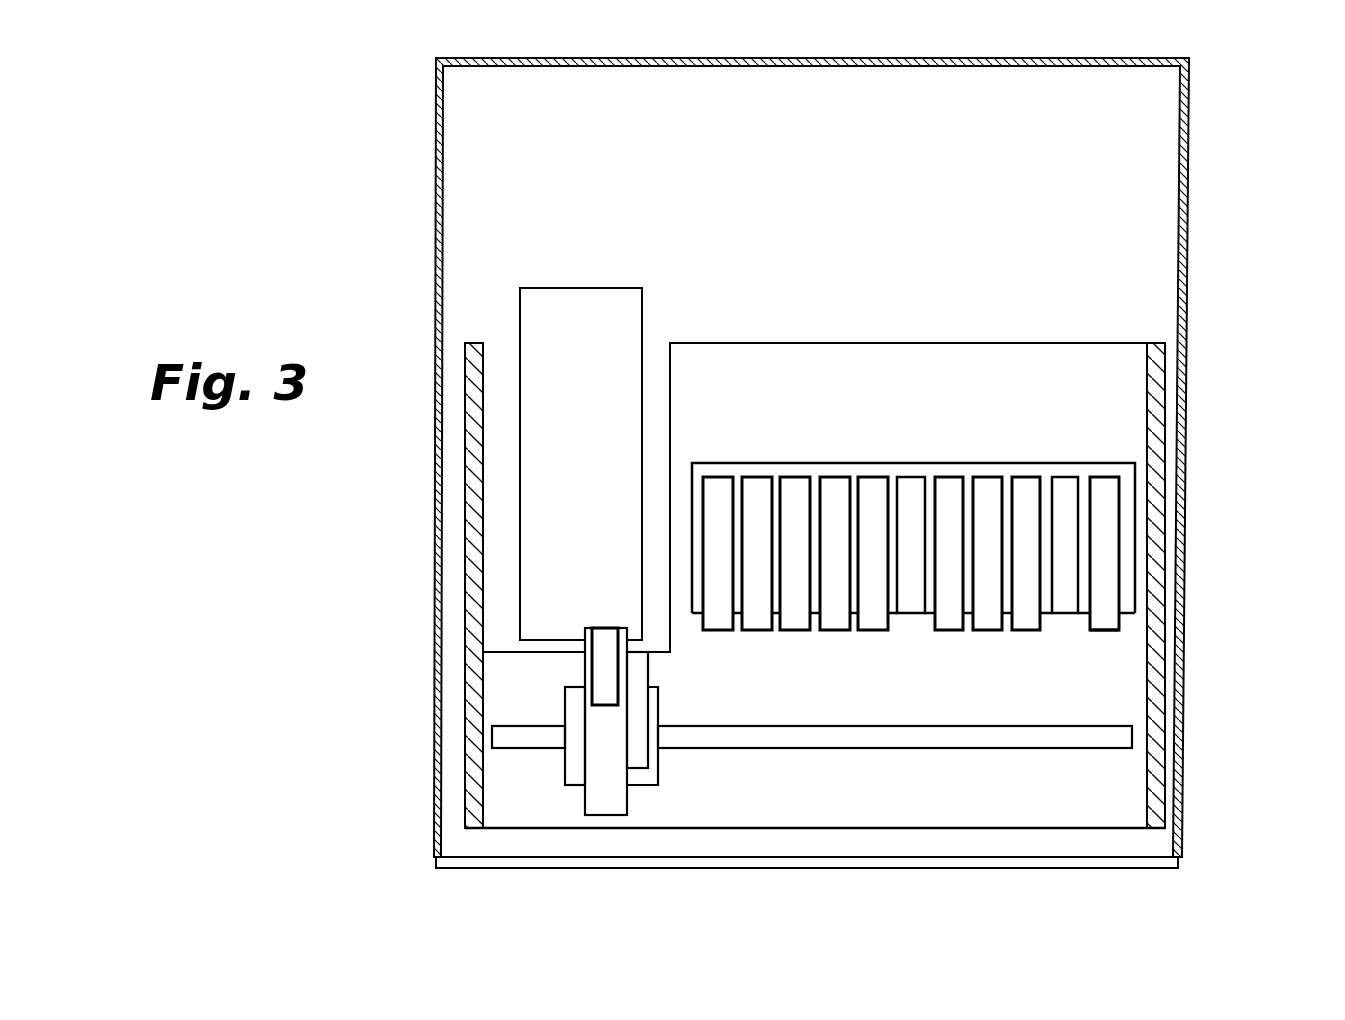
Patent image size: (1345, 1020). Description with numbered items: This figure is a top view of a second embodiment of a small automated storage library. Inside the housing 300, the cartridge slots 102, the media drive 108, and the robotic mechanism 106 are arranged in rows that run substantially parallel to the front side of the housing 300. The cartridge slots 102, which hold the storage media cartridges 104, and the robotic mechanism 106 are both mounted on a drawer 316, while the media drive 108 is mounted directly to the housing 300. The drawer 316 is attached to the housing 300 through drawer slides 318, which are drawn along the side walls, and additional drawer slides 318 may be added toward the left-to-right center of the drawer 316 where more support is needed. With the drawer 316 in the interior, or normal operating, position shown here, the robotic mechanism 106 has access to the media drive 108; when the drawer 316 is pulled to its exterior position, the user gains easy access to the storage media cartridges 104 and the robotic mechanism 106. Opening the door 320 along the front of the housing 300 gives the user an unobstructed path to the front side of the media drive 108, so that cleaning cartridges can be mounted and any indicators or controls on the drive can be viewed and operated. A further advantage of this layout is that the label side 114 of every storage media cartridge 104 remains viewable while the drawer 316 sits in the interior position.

The housing 300 is at (1187, 266).
The cartridge slots 102 is at (1087, 463).
The storage media cartridges 104 is at (1103, 530).
The robotic mechanism 106 is at (573, 792).
The media drive 108 is at (545, 320).
The label side 114 is at (1107, 632).
The drawer 316 is at (735, 800).
The drawer slides 318 is at (466, 748).
The door 320 is at (880, 868).